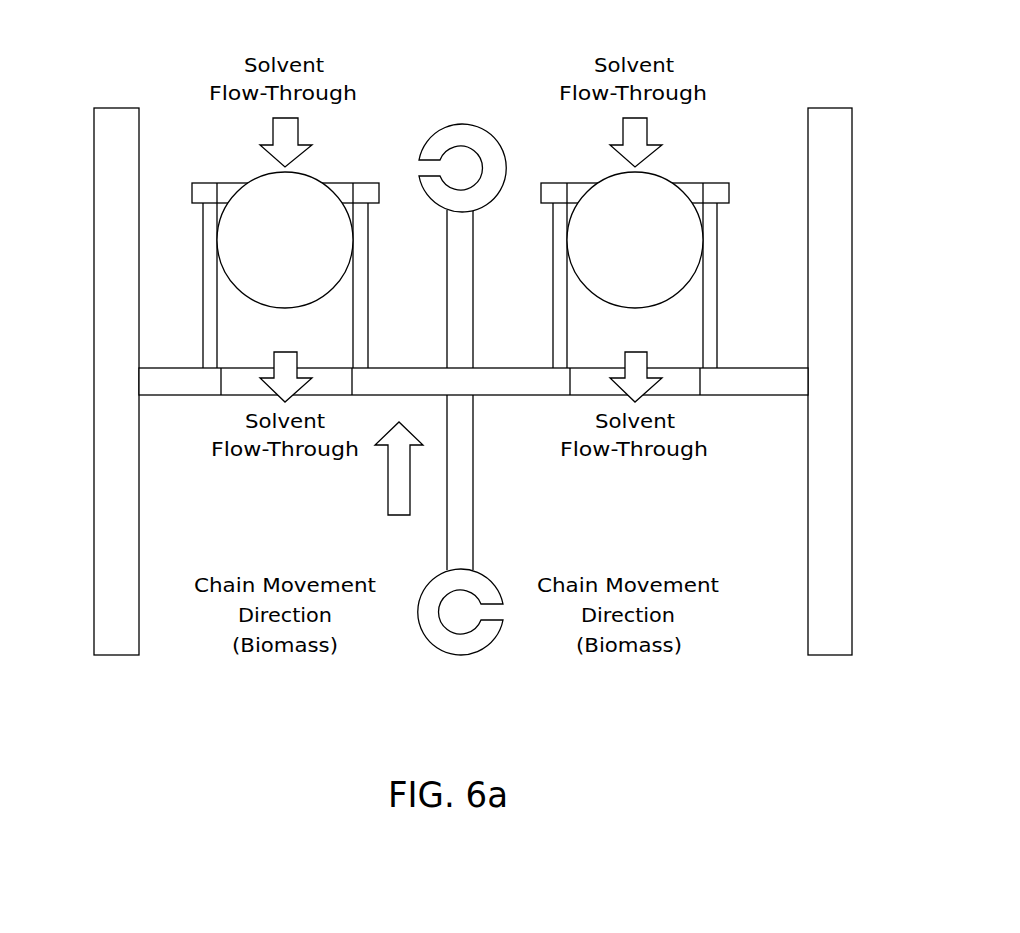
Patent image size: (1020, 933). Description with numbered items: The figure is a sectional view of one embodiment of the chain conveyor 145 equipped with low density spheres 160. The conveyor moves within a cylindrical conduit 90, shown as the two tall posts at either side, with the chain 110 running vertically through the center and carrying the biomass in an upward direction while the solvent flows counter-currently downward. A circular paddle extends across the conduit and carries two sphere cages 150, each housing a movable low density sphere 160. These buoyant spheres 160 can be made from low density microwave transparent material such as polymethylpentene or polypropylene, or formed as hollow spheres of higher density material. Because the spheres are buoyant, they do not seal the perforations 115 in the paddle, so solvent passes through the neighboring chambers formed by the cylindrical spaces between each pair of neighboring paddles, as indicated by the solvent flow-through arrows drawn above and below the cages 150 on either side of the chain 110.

The chain conveyor 145 is at (136, 57).
The conduit 90 is at (93, 380).
The chain 110 is at (474, 288).
The perforations 115 is at (229, 396).
The sphere cages 150 is at (369, 266).
The low density spheres 160 is at (327, 196).